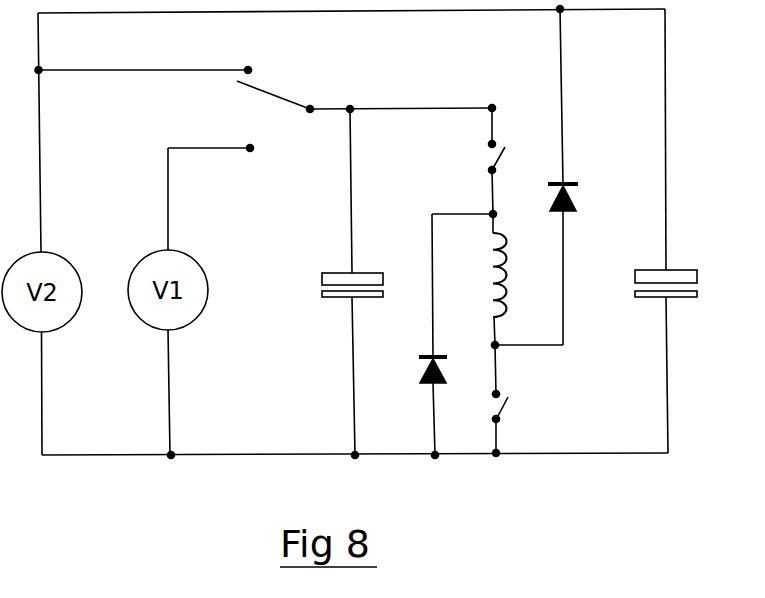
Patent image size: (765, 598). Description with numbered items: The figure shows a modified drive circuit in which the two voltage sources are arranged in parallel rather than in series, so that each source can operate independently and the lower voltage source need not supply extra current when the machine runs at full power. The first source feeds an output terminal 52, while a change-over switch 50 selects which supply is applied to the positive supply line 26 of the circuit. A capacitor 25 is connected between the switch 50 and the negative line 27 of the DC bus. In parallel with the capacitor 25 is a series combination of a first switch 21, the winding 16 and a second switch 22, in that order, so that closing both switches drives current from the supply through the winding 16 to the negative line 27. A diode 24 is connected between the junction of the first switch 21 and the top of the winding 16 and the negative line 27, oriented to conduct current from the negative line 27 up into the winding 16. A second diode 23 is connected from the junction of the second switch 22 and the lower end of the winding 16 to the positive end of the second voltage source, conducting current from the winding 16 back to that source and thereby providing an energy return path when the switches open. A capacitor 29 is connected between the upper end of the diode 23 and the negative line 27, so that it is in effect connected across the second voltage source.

The winding 16 is at (510, 257).
The first switch 21 is at (487, 158).
The second switch 22 is at (510, 408).
The diode 23 is at (582, 193).
The diode 24 is at (418, 363).
The capacitor 25 is at (370, 273).
The supply line node 26 is at (407, 107).
The negative line 27 is at (230, 457).
The capacitor 29 is at (647, 270).
The change-over switch 50 is at (273, 88).
The output terminal 52 is at (225, 152).